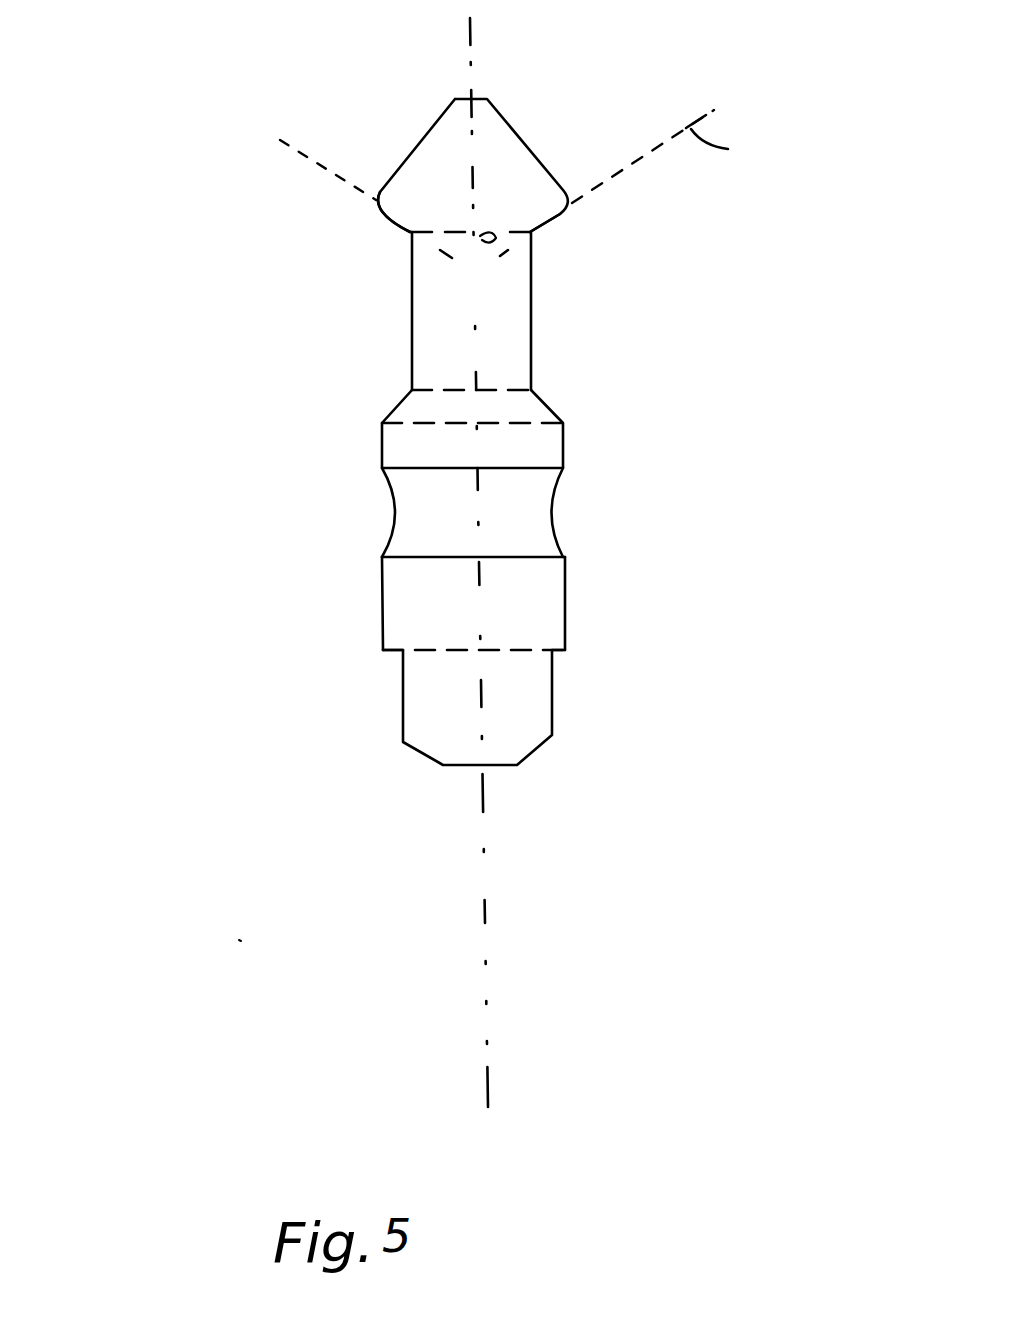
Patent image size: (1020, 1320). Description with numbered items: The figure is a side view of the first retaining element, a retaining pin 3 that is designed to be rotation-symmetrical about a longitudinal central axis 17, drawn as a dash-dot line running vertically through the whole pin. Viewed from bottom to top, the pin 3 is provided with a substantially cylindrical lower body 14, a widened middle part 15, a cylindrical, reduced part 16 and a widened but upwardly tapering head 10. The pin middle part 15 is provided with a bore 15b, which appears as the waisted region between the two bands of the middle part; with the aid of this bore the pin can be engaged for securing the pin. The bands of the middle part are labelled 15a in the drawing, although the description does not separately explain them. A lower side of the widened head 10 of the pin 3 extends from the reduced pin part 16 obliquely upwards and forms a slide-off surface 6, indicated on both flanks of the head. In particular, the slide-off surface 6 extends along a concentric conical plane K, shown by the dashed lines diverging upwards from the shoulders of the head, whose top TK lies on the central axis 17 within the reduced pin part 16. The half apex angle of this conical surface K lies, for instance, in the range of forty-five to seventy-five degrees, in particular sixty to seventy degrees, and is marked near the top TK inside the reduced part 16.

The retaining pin 3 is at (243, 106).
The head 10 is at (450, 131).
The slide-off surface 6 is at (386, 230).
The reduced part 16 is at (419, 308).
The middle part 15 is at (348, 518).
The cylindrical band 15a is at (548, 434).
The bore 15b is at (510, 513).
The lower body 14 is at (343, 790).
The longitudinal central axis 17 is at (505, 580).
The conical plane K is at (666, 156).
The top of the conical plane TK is at (479, 280).